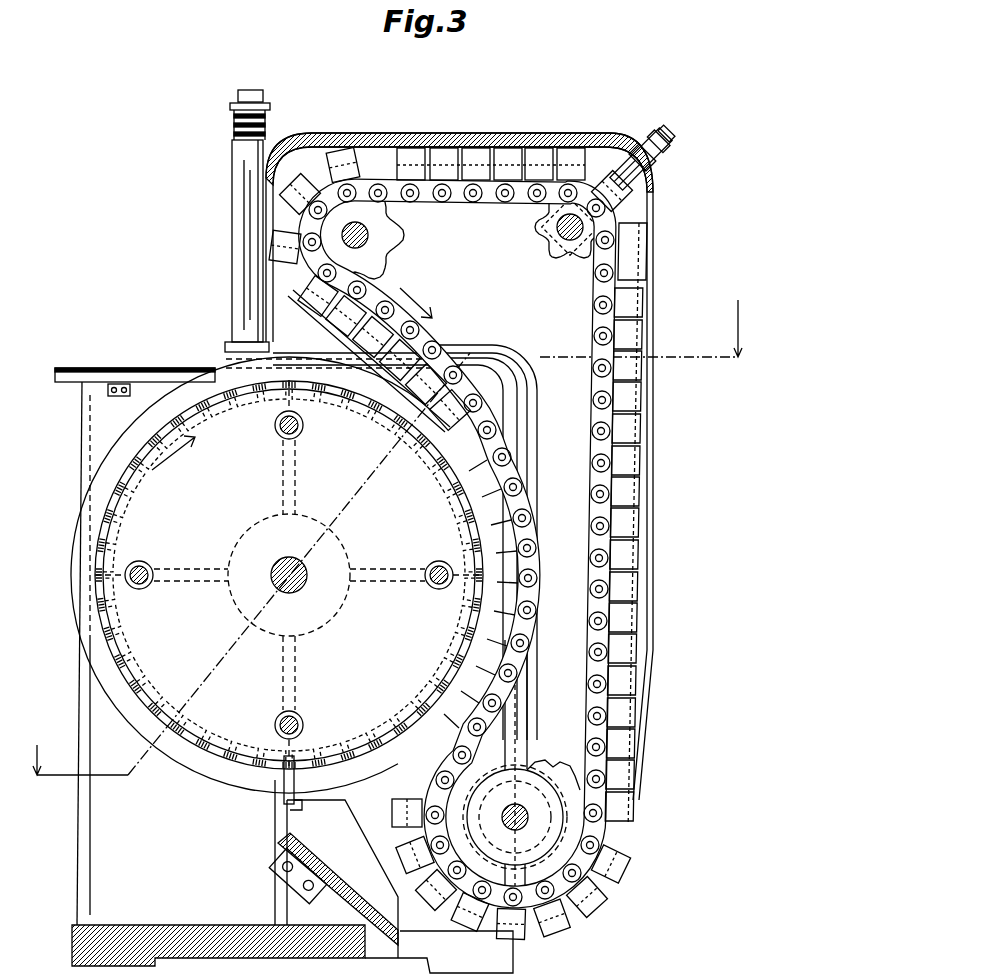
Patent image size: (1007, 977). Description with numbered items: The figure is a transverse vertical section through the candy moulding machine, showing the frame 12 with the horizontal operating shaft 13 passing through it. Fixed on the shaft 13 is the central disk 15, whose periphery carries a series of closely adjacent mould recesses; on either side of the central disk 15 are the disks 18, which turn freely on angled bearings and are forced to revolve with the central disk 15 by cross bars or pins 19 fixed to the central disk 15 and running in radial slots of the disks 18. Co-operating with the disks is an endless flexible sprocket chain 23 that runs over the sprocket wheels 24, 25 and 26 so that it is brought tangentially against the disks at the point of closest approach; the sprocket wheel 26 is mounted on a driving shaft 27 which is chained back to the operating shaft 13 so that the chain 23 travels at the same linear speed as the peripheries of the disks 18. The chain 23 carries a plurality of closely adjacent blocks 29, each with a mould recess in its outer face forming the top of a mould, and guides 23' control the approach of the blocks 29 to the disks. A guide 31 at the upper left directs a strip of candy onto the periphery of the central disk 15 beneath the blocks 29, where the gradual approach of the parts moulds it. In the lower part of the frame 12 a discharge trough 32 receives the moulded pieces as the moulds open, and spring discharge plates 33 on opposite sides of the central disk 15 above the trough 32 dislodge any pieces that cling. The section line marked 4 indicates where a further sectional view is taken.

The frame 12 is at (405, 531).
The operating shaft 13 is at (296, 590).
The central disk 15 is at (299, 564).
The disks 18 is at (76, 607).
The cross bars or pins 19 is at (288, 436).
The endless flexible sprocket chain 23 is at (458, 545).
The guides 23' is at (318, 361).
The sprocket wheel 24 is at (400, 246).
The sprocket wheel 25 is at (562, 262).
The sprocket wheel 26 is at (543, 752).
The driving shaft 27 is at (528, 808).
The blocks 29 is at (475, 160).
The guide 31 is at (74, 372).
The discharge trough 32 is at (333, 879).
The spring discharge plates 33 is at (330, 777).
The section line 4- 4 is at (386, 527).